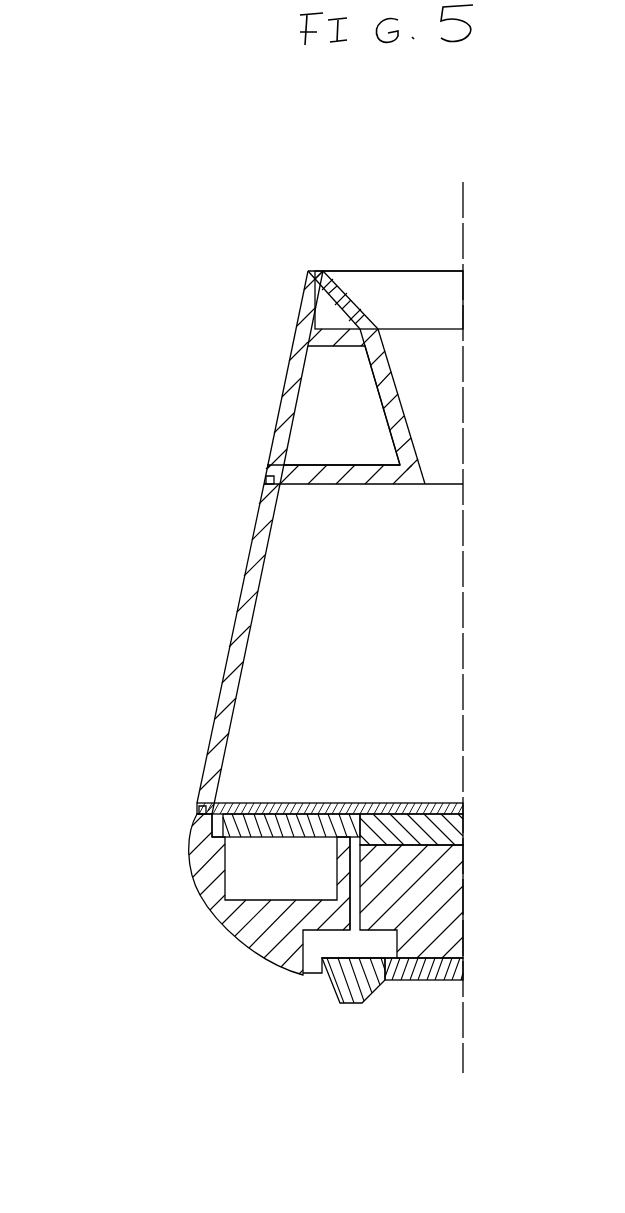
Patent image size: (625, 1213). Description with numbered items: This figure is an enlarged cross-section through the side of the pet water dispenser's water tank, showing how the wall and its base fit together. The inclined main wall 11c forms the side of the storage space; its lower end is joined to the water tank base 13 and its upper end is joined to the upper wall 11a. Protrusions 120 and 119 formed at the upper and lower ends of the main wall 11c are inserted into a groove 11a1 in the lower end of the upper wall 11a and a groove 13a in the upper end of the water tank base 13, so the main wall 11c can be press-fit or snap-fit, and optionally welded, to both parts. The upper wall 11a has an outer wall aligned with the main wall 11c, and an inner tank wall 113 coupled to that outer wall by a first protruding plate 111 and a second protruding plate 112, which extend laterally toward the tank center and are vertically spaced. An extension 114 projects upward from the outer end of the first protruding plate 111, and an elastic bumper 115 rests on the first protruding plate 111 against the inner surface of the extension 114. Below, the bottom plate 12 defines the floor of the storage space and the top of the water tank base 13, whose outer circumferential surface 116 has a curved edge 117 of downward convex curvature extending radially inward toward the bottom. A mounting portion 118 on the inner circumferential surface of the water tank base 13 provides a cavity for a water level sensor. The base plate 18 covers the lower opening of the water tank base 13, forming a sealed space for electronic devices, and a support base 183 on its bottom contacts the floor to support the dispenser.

The upper wall 11a is at (326, 370).
The groove 11a1 is at (267, 480).
The main wall 11c is at (215, 627).
The first protruding plate 111 is at (337, 340).
The second protruding plate 112 is at (350, 473).
The inner tank wall 113 is at (393, 383).
The extension 114 is at (302, 301).
The bumper 115 is at (326, 271).
The outer circumferential surface 116 is at (223, 930).
The curved edge 117 is at (208, 919).
The mounting portion 118 is at (267, 484).
The protrusion 120 is at (196, 475).
The protrusion 119 is at (203, 808).
The bottom plate 12 is at (265, 812).
The water tank base 13 is at (253, 919).
The groove 13a is at (197, 812).
The base plate 18 is at (433, 970).
The support base 183 is at (343, 992).